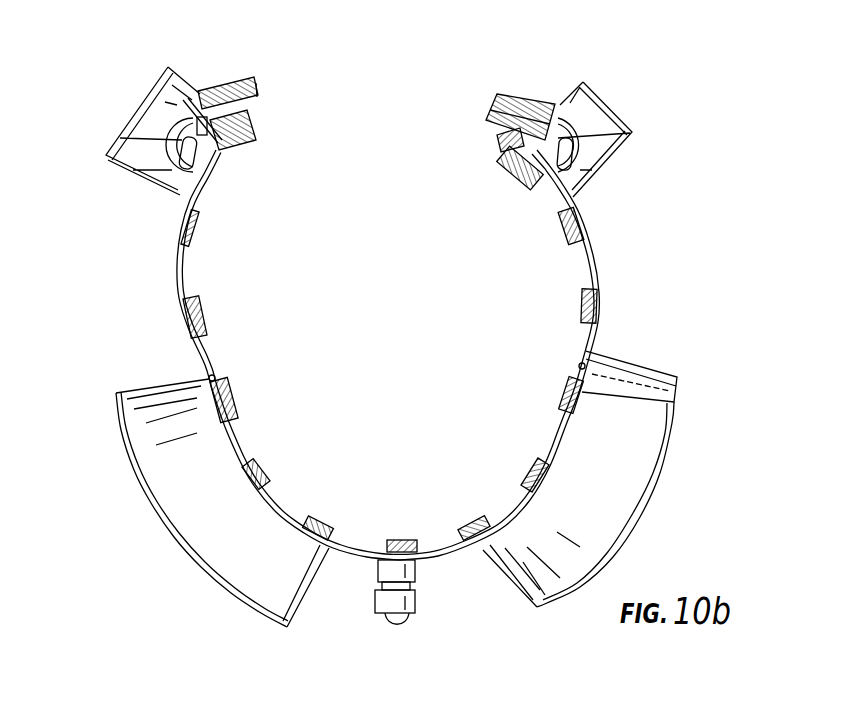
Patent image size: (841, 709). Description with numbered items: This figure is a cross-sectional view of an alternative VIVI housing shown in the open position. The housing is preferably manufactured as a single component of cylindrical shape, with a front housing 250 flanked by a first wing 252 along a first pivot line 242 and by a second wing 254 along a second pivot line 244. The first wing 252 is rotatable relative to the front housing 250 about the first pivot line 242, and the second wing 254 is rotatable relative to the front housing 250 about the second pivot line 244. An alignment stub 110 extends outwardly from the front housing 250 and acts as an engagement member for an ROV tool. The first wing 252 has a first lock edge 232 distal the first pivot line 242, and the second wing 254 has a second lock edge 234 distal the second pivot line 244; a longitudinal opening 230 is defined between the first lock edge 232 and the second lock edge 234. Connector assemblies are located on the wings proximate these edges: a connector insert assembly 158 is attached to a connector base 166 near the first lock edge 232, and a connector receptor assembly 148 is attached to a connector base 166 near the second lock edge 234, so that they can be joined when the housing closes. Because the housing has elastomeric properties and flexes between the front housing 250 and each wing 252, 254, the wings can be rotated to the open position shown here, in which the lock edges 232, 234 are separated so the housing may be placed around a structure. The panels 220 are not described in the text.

The alignment stub 110 is at (417, 595).
The connector receptor assembly 148 is at (497, 90).
The connector insert assembly 158 is at (202, 92).
The connector base 166 is at (175, 190).
The lower cover segment 220 is at (194, 536).
The longitudinal opening 230 is at (257, 50).
The first lock edge 232 is at (250, 117).
The second lock edge 234 is at (492, 133).
The first pivot line 242 is at (214, 375).
The second pivot line 244 is at (580, 366).
The front housing 250 is at (390, 378).
The first wing 252 is at (172, 264).
The second wing 254 is at (592, 258).